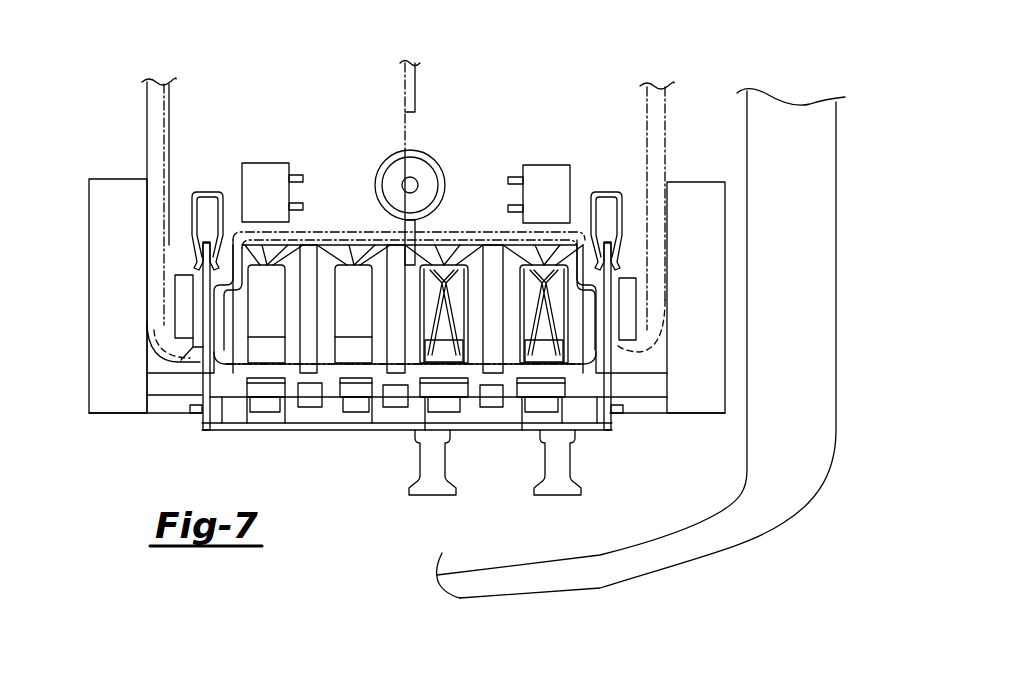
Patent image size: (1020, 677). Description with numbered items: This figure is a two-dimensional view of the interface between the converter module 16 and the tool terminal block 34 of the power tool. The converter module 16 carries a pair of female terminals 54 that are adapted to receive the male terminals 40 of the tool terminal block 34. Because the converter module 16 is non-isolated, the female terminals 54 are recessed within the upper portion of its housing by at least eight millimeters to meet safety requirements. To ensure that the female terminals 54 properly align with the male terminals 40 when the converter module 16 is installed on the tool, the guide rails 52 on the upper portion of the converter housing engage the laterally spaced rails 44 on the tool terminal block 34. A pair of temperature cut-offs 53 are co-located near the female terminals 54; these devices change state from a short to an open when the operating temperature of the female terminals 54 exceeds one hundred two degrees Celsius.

The converter module 16 is at (845, 180).
The tool terminal block 34 is at (310, 408).
The male terminals 40 is at (203, 323).
The laterally spaced rails 44 is at (124, 394).
The guide rails 52 is at (147, 122).
The temperature cut-offs (TCOs) 53 is at (280, 163).
The female terminals 54 is at (192, 217).